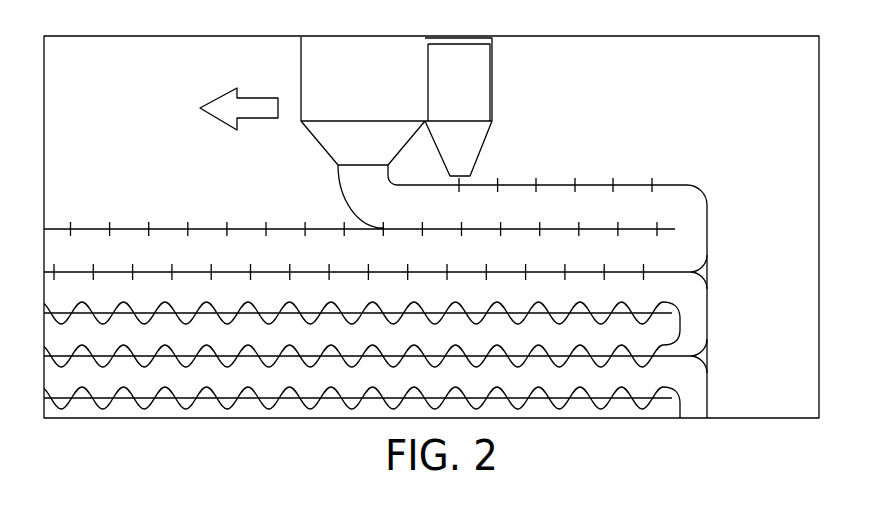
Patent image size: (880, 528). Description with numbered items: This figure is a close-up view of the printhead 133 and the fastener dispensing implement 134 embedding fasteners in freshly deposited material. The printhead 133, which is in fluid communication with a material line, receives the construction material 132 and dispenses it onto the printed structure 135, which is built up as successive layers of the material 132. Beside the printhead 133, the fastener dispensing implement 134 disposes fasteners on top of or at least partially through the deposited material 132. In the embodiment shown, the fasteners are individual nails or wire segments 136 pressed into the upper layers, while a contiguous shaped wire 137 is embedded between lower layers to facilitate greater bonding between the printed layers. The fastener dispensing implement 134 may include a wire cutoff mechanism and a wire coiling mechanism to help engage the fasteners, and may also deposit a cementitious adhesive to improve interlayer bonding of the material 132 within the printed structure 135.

The construction material 132 is at (421, 213).
The printhead 133 is at (387, 153).
The fastener dispensing implement 134 is at (482, 130).
The printed structure 135 is at (688, 143).
The individual nails or wire segments 136 is at (231, 226).
The contiguous shaped wire 137 is at (686, 400).